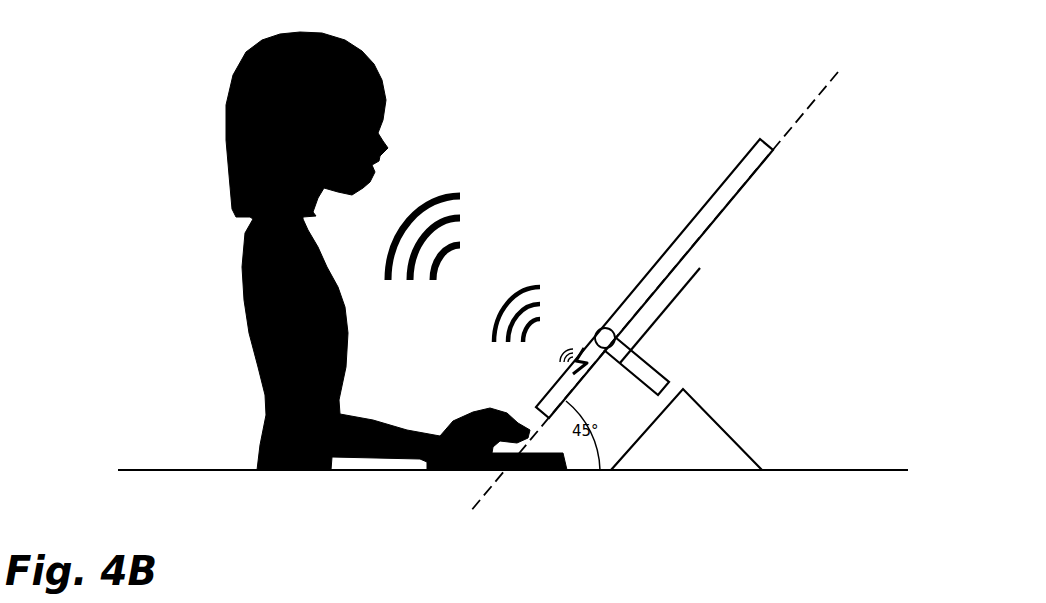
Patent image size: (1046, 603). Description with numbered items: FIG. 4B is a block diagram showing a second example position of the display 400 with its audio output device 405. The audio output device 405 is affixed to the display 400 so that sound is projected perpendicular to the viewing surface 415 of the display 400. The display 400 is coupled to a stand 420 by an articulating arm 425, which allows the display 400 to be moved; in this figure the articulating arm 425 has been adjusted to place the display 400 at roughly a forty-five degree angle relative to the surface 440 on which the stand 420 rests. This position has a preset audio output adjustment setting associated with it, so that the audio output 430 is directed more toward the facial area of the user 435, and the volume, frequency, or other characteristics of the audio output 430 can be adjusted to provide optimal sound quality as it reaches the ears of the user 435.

The display 400 is at (750, 167).
The audio output device 405 is at (614, 335).
The viewing surface 415 is at (690, 181).
The stand 420 is at (706, 447).
The articulating arm 425 is at (664, 392).
The audio output 430 is at (527, 265).
The user 435 is at (372, 78).
The surface 440 is at (827, 470).